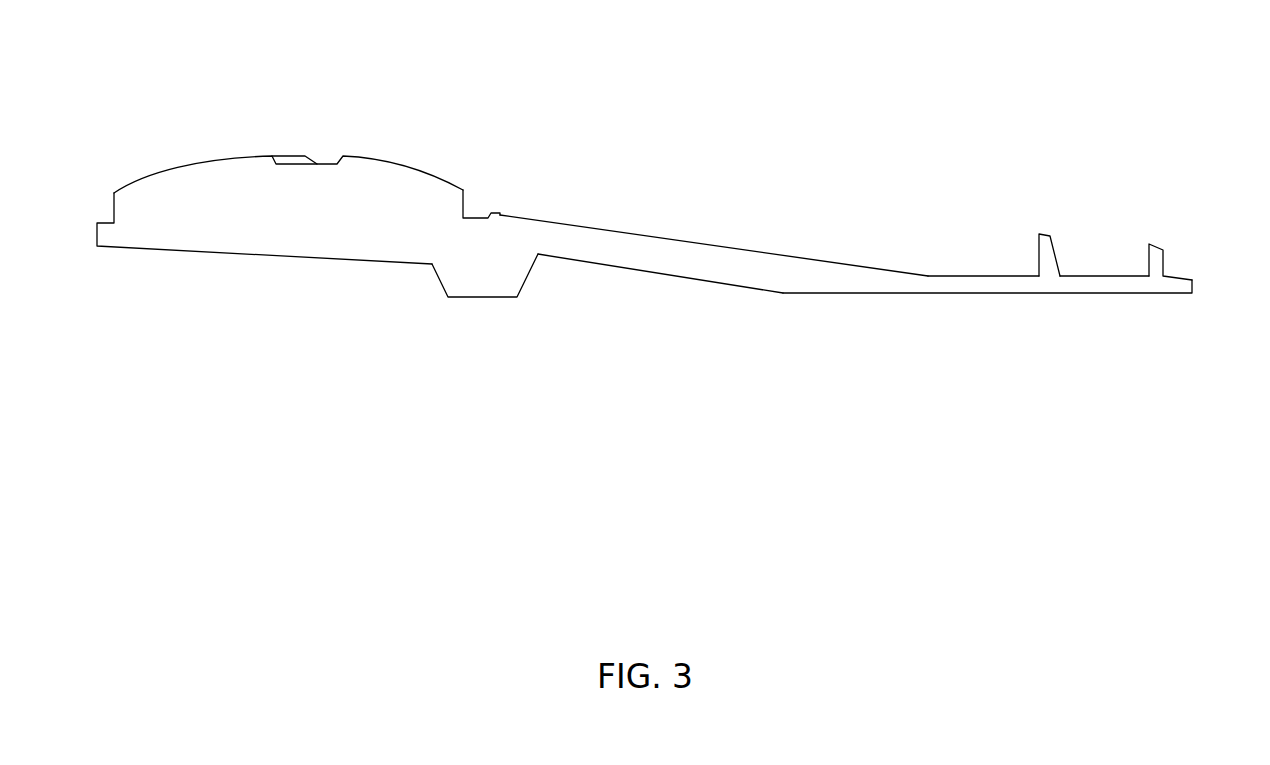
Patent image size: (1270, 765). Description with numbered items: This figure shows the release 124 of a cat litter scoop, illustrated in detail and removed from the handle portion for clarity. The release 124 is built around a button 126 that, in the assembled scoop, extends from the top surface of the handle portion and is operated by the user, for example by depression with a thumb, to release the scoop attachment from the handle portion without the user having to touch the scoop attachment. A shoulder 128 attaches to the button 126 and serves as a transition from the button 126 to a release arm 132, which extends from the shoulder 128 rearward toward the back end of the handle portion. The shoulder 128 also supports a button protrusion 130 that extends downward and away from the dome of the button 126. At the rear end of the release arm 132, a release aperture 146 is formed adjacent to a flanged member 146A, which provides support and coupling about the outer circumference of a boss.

The release 124 is at (667, 187).
The button 126 is at (210, 160).
The shoulder 128 is at (517, 231).
The button protrusion 130 is at (476, 297).
The release arm 132 is at (665, 273).
The release aperture 146 is at (1086, 220).
The flanged member 146A is at (1037, 251).